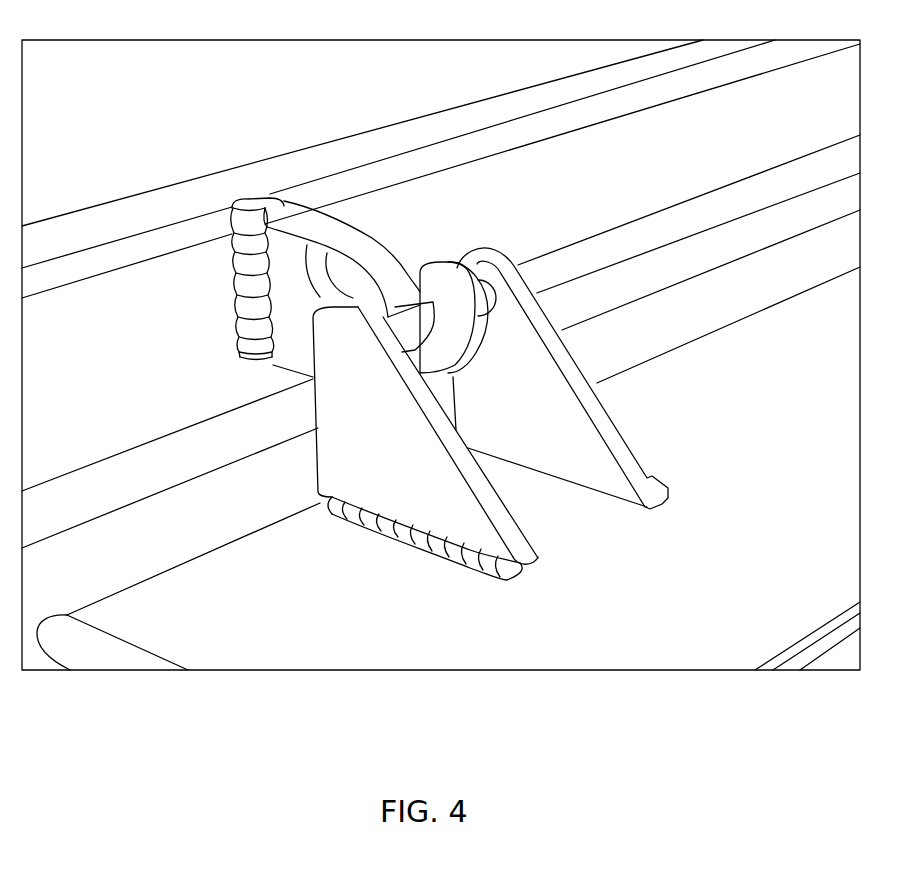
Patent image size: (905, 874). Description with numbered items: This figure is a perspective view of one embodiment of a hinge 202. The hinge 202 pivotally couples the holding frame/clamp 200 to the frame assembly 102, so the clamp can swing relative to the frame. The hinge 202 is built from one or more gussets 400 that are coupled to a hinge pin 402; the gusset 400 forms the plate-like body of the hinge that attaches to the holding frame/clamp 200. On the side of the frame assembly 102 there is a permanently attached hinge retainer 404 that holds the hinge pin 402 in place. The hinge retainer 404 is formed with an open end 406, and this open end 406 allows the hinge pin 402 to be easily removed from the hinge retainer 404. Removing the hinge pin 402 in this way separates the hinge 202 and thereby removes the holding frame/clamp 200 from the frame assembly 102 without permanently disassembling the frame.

The frame assembly 102 is at (160, 322).
The holding frame/clamp 200 is at (738, 560).
The hinge 202 is at (512, 238).
The gusset 400 is at (387, 433).
The hinge pin 402 is at (412, 323).
The hinge retainer 404 is at (317, 228).
The open end 406 is at (436, 246).